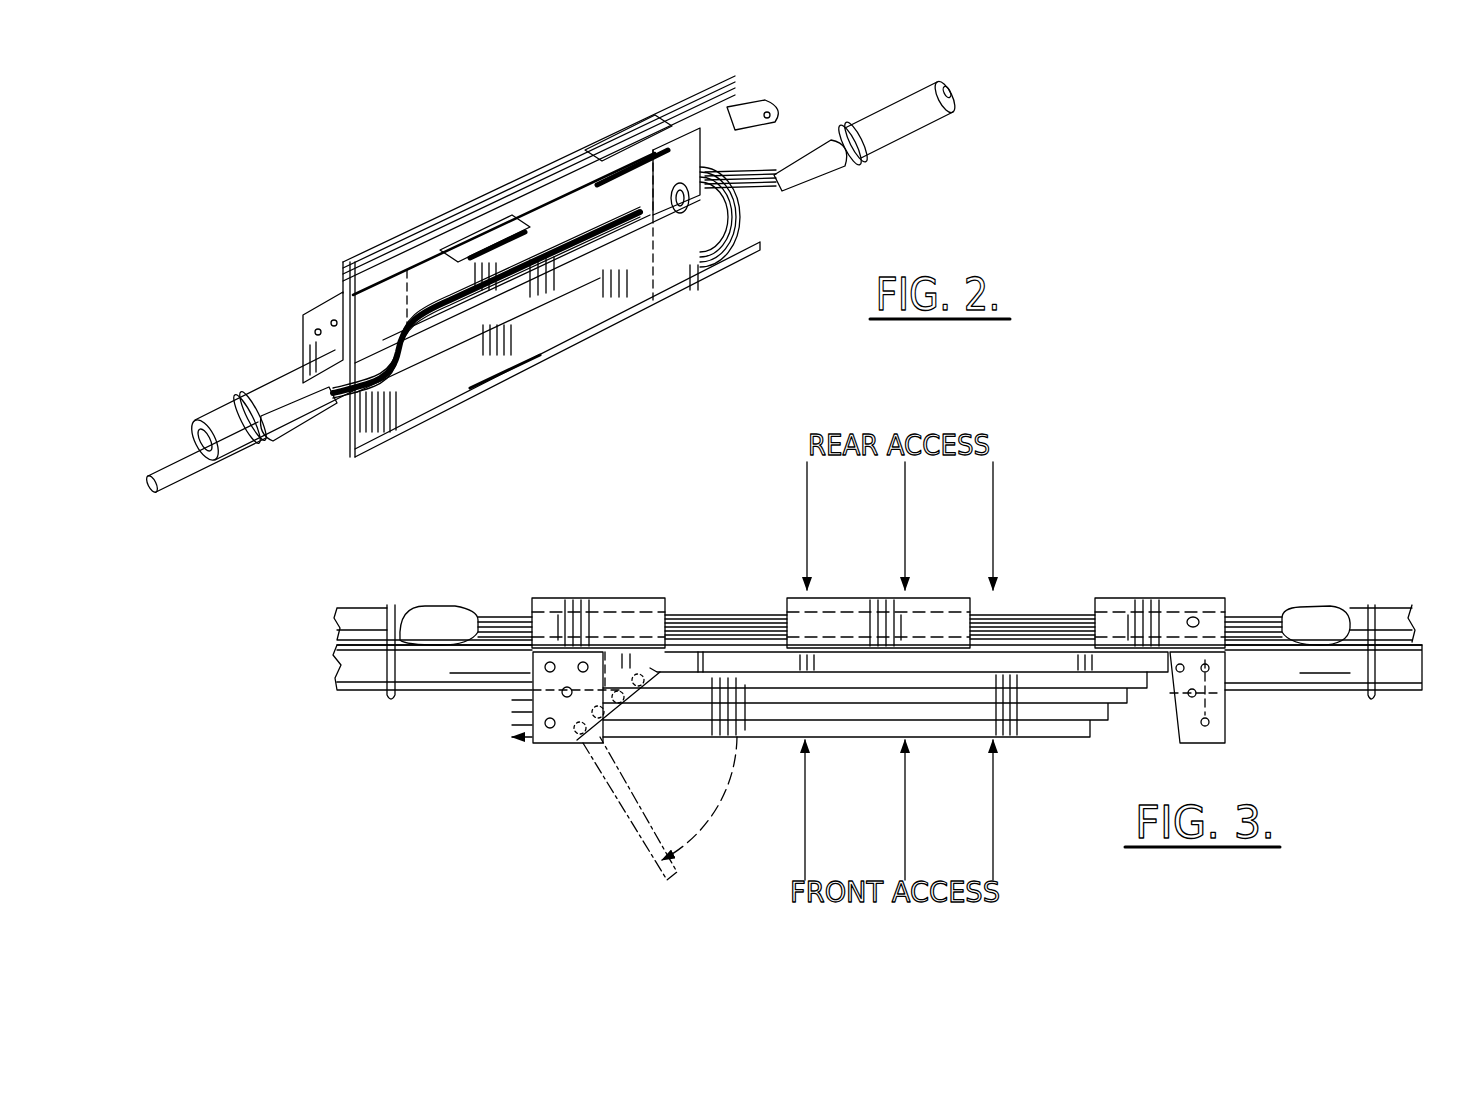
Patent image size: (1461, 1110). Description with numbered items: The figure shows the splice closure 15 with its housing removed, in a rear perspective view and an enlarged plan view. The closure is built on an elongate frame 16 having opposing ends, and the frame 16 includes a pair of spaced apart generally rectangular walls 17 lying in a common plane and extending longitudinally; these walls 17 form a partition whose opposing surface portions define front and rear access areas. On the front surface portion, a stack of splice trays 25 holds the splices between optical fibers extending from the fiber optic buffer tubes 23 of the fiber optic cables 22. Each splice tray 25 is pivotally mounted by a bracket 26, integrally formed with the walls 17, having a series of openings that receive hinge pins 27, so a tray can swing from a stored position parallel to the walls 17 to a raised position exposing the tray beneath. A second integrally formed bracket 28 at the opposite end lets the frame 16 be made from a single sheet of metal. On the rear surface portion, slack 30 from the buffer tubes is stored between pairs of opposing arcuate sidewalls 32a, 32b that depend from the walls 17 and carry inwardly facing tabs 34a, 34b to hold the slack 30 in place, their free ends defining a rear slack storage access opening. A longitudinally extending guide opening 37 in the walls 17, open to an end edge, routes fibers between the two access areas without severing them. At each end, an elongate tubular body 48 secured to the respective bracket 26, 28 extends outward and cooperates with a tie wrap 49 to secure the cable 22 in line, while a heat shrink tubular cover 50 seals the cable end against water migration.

In FIG. 2, the splice closure 15 is at (348, 215).
In FIG. 3, the splice closure 15 is at (1112, 568).
In FIG. 2, the elongate frame 16 is at (730, 105).
In FIG. 2, the walls 17 is at (364, 452).
In FIG. 2, the fiber optic cable 22 is at (178, 482).
In FIG. 3, the fiber optic cable 22 is at (352, 612).
In FIG. 2, the fiber optic buffer tube 23 is at (745, 214).
In FIG. 3, the fiber optic buffer tube 23 is at (512, 620).
In FIG. 2, the splice tray 25 is at (430, 228).
In FIG. 3, the splice tray 25 is at (648, 840).
In FIG. 2, the bracket 26 is at (300, 333).
In FIG. 3, the bracket 26 is at (550, 742).
In FIG. 3, the hinge pin 27 is at (592, 748).
In FIG. 3, the second bracket 28 is at (1225, 727).
In FIG. 2, the slack 30 is at (654, 324).
In FIG. 3, the slack 30 is at (1045, 612).
In FIG. 2, the sidewall 32a is at (462, 232).
In FIG. 3, the sidewall 32b is at (605, 602).
In FIG. 2, the inwardly facing tab 34a is at (560, 240).
In FIG. 2, the inwardly facing tab 34b is at (732, 265).
In FIG. 2, the guide opening 37 is at (498, 368).
In FIG. 2, the elongate tubular body 48 is at (272, 378).
In FIG. 3, the elongate tubular body 48 is at (362, 690).
In FIG. 2, the tie wrap 49 is at (250, 445).
In FIG. 3, the tie wrap 49 is at (392, 698).
In FIG. 2, the heat shrink tubular cover 50 is at (315, 430).
In FIG. 3, the heat shrink tubular cover 50 is at (445, 607).